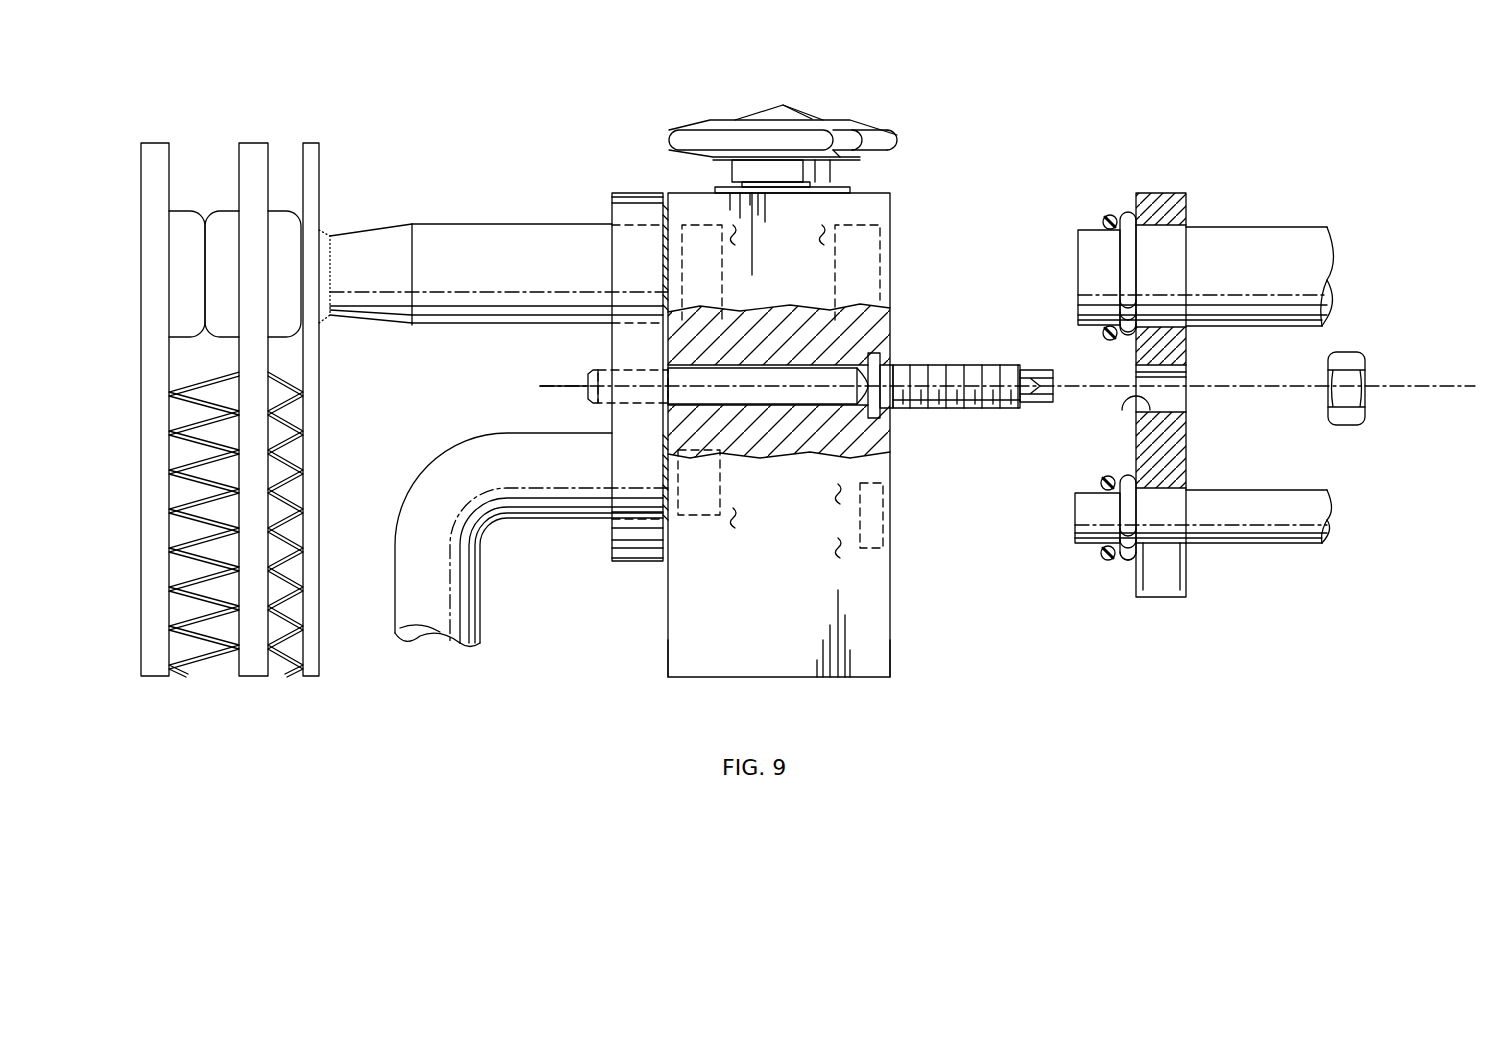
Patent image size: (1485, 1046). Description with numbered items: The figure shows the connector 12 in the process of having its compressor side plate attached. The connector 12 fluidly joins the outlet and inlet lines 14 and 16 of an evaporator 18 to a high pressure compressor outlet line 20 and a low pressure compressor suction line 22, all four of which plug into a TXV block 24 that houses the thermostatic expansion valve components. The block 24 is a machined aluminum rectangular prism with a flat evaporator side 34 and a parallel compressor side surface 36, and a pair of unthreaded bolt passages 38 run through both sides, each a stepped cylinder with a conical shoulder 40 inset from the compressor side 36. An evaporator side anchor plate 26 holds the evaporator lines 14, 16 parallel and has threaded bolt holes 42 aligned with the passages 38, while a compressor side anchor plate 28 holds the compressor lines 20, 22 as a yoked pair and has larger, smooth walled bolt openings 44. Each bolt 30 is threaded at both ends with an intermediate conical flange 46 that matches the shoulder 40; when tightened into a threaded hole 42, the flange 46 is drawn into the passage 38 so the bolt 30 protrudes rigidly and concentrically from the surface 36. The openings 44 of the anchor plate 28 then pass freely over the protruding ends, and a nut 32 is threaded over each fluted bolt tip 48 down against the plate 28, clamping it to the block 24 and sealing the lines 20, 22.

The connector 12 is at (945, 155).
The evaporator outlet line 14 is at (483, 233).
The evaporator inlet line 16 is at (512, 440).
The evaporator 18 is at (155, 148).
The high pressure compressor outlet line 20 is at (1255, 545).
The low pressure compressor suction line 22 is at (1270, 233).
The TXV block 24 is at (900, 197).
The evaporator side anchor plate 26 is at (627, 182).
The compressor side anchor plate 28 is at (1170, 180).
The bolt 30 is at (947, 420).
The nut 32 is at (1352, 375).
The evaporator side 34 is at (668, 640).
The compressor side surface 36 is at (890, 640).
The bolt passage 38 is at (763, 400).
The conical shoulder 40 is at (845, 447).
The threaded bolt hole 42 is at (590, 372).
The bolt opening 44 is at (1125, 415).
The conical flange 46 is at (882, 362).
The bolt tip 48 is at (1033, 407).